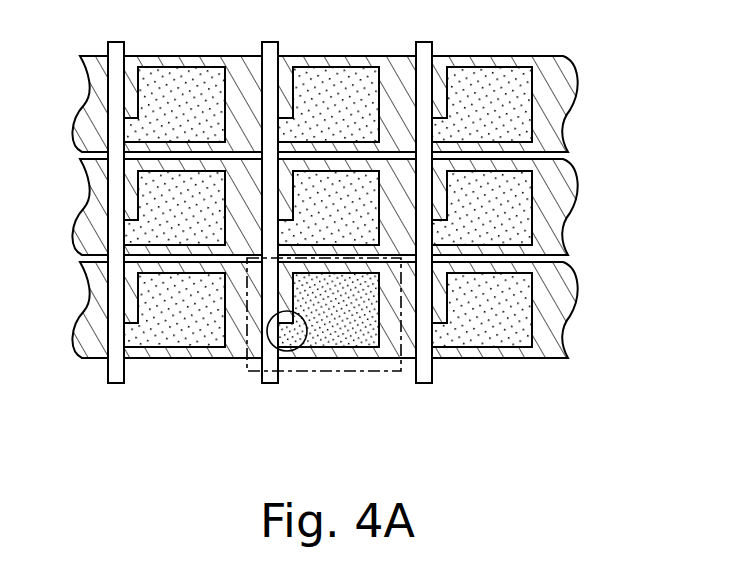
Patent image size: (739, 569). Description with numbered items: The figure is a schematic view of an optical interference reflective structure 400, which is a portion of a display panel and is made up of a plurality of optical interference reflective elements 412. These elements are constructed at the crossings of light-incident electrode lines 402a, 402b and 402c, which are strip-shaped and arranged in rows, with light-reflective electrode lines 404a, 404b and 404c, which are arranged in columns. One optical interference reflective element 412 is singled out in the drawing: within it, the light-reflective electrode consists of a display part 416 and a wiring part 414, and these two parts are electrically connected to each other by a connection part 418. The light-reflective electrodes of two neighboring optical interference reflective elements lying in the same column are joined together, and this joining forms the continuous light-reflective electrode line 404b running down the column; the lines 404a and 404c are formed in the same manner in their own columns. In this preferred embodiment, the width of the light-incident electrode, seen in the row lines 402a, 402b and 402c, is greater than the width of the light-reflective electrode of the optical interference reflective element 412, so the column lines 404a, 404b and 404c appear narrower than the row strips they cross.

The optical interference reflective structure 400 is at (337, 239).
The light-incident electrode line 402a is at (547, 305).
The light-incident electrode line 402b is at (547, 200).
The light-incident electrode line 402c is at (547, 95).
The light-reflective electrode line 404a is at (182, 87).
The light-reflective electrode line 404b is at (304, 206).
The light-reflective electrode line 404c is at (488, 88).
The optical interference reflective element 412 is at (389, 364).
The wiring part 414 is at (263, 380).
The display part 416 is at (328, 322).
The connection part 418 is at (286, 338).